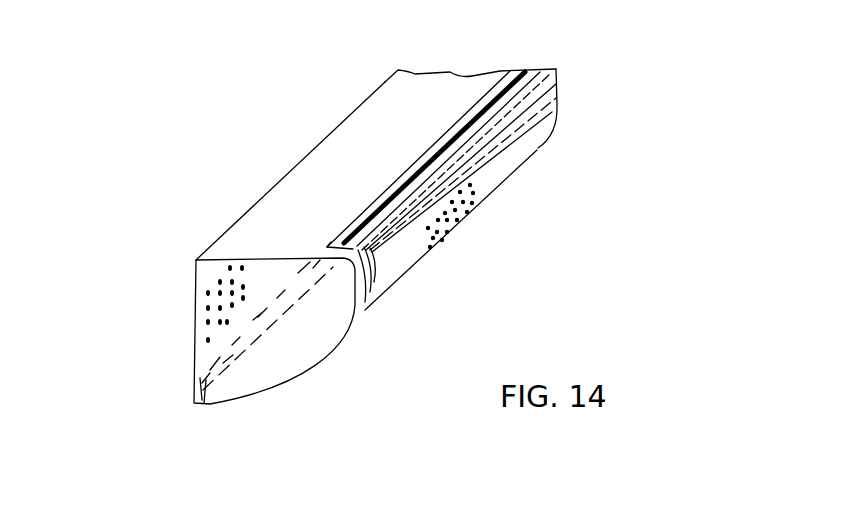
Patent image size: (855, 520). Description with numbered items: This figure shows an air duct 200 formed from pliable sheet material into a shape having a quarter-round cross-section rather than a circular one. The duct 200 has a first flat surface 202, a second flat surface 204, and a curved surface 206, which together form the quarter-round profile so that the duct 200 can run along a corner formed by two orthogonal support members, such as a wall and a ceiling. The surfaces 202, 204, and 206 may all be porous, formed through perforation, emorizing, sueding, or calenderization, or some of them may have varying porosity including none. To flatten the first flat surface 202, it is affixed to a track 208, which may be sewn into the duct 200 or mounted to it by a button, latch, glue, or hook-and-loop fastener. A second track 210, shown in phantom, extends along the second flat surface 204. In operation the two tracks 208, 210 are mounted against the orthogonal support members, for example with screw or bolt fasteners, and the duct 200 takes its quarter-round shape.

The air duct 200 is at (583, 148).
The first flat surface 202 is at (438, 78).
The second flat surface 204 is at (195, 286).
The curved surface 206 is at (380, 289).
The track 208 is at (432, 152).
The second track 210 is at (204, 406).